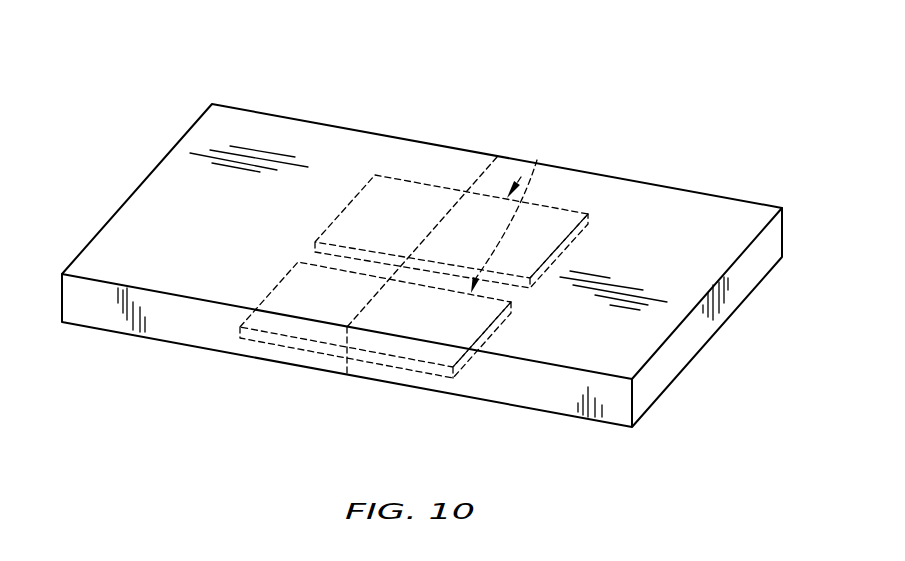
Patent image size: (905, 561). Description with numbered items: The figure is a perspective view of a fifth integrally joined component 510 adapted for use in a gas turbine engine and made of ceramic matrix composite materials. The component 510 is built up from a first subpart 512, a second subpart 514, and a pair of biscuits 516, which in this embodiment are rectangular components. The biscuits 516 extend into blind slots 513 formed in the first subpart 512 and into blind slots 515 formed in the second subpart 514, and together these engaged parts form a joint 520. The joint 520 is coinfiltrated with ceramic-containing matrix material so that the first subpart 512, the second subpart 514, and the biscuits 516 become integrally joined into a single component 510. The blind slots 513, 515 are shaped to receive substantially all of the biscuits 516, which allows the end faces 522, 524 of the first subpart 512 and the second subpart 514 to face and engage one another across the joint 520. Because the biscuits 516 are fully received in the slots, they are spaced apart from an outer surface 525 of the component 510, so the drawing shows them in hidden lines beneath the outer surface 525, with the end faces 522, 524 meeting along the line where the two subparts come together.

The integrally joined component 510 is at (716, 58).
The first subpart 512 is at (255, 90).
The blind slots 513 is at (360, 218).
The second subpart 514 is at (734, 182).
The blind slots 515 is at (532, 233).
The biscuits 516 is at (542, 162).
The joint 520 is at (432, 160).
The end face 522 is at (343, 344).
The end face 524 is at (349, 378).
The outer surface 525 is at (378, 134).